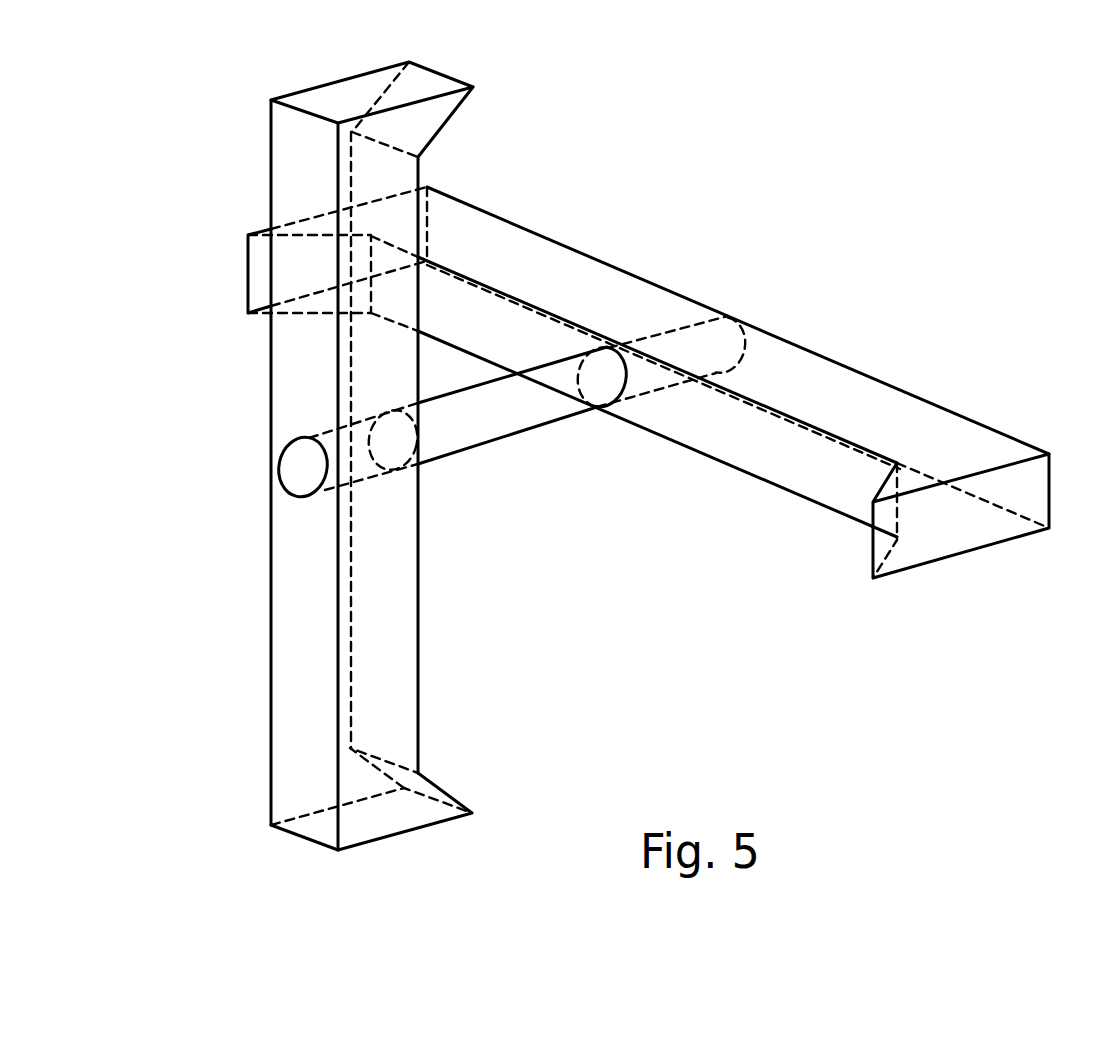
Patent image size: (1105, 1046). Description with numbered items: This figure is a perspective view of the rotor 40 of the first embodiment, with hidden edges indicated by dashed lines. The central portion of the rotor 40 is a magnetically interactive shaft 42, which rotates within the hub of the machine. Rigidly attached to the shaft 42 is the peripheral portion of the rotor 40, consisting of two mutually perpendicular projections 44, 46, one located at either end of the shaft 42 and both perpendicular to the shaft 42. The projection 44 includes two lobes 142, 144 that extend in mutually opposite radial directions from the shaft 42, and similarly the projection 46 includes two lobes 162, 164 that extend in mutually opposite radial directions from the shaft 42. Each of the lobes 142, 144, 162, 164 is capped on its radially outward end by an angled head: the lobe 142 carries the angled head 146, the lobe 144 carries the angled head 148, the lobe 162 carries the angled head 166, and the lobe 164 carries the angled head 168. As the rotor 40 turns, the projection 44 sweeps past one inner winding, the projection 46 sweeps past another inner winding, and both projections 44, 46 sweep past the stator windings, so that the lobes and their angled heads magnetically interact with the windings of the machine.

The rotor 40 is at (787, 711).
The magnetically interactive shaft 42 is at (520, 423).
The projection 44 is at (270, 465).
The projection 46 is at (690, 297).
The lobe 142 is at (287, 355).
The lobe 144 is at (283, 680).
The angled head 146 is at (360, 87).
The angled head 148 is at (378, 835).
The lobe 162 is at (830, 375).
The lobe 164 is at (558, 280).
The angled head 166 is at (978, 533).
The angled head 168 is at (393, 220).